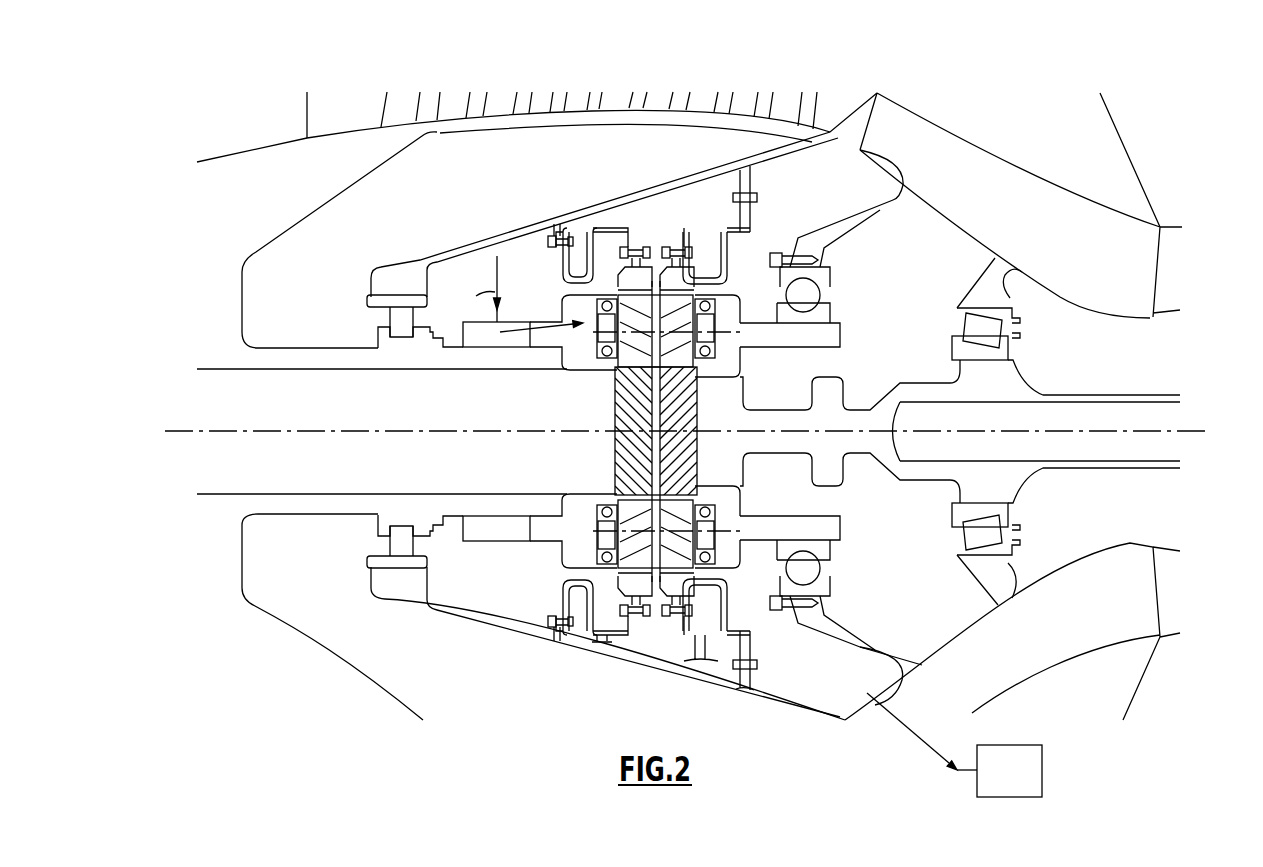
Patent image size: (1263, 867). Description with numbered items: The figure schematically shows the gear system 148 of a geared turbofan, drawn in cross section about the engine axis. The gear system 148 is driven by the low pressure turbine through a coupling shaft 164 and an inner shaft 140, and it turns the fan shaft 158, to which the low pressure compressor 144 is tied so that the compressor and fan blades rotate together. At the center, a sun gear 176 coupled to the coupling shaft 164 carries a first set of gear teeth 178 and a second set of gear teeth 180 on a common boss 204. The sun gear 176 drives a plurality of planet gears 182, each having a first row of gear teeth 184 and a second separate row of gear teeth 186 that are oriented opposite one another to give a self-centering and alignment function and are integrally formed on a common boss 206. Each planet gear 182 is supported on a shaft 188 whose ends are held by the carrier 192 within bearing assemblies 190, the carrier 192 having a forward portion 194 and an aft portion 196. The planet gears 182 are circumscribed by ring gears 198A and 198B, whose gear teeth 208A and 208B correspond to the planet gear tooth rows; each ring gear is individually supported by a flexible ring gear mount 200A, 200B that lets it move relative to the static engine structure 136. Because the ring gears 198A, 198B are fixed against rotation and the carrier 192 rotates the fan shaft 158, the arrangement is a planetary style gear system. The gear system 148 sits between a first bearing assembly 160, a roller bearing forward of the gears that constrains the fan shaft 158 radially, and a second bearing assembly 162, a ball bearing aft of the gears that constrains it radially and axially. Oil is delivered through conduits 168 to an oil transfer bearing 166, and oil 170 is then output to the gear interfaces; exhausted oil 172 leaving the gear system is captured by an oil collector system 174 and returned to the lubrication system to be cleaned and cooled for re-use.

The static engine structure 136 is at (613, 657).
The inner shaft 140 is at (1181, 389).
The low pressure compressor 144 is at (447, 65).
The gear system 148 is at (540, 603).
The fan shaft 158 is at (317, 357).
The first bearing assembly 160 is at (360, 298).
The second bearing assembly 162 is at (835, 266).
The coupling shaft 164 is at (841, 379).
The oil transfer bearing 166 is at (473, 338).
The conduits 168 is at (498, 268).
The oil 170 is at (538, 335).
The exhausted oil 172 is at (905, 740).
The oil collector system 174 is at (995, 781).
The sun gear 176 is at (670, 431).
The first set of gear teeth 178 is at (625, 462).
The second set of gear teeth 180 is at (680, 477).
The planet gears 182 is at (611, 370).
The first row of gear teeth 184 is at (568, 295).
The second row of gear teeth 186 is at (726, 299).
The shaft 188 is at (707, 352).
The bearing assemblies 190 is at (593, 368).
The carrier 192 is at (623, 519).
The forward portion 194 is at (580, 553).
The aft portion 196 is at (727, 545).
The ring gear 198A is at (635, 270).
The ring gear 198B is at (670, 275).
The flexible ring gear mount 200A is at (577, 233).
The flexible ring gear mount 200B is at (753, 213).
The common boss 204 is at (658, 443).
The common boss 206 is at (712, 335).
The gear teeth 208A is at (583, 250).
The gear teeth 208B is at (684, 233).